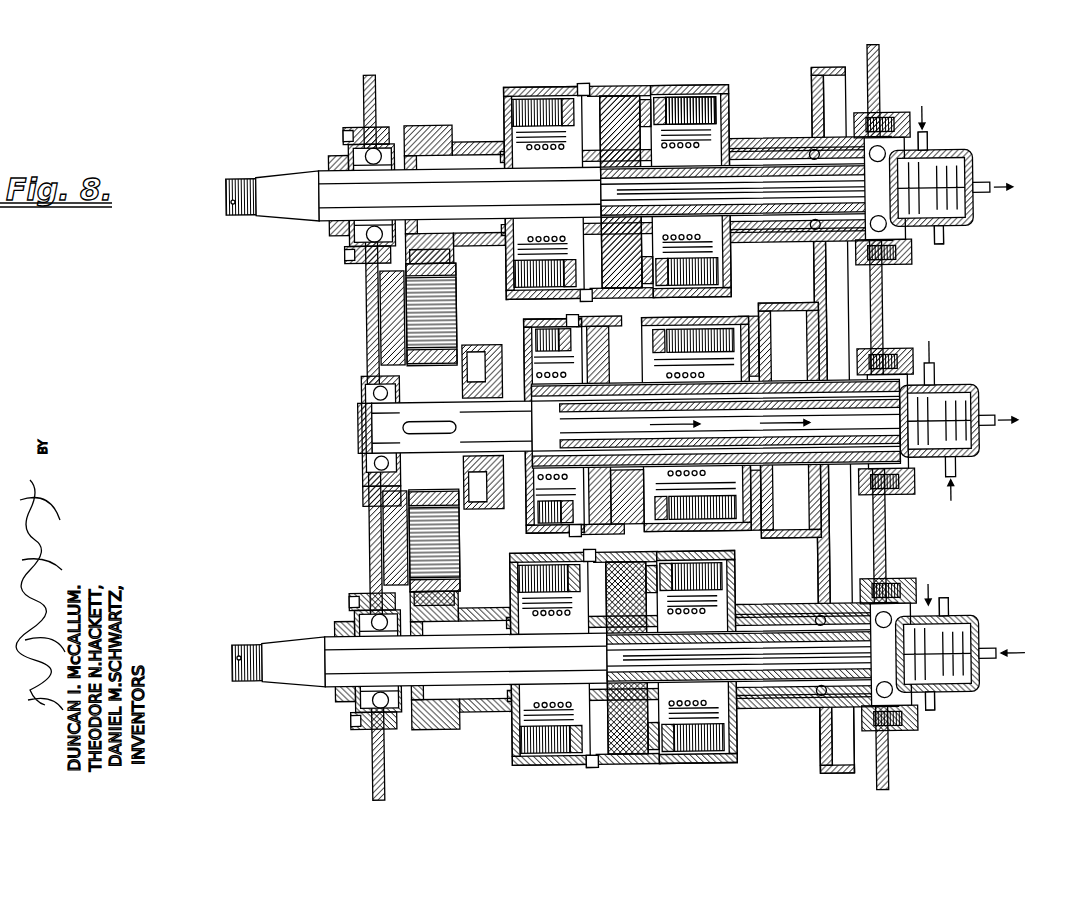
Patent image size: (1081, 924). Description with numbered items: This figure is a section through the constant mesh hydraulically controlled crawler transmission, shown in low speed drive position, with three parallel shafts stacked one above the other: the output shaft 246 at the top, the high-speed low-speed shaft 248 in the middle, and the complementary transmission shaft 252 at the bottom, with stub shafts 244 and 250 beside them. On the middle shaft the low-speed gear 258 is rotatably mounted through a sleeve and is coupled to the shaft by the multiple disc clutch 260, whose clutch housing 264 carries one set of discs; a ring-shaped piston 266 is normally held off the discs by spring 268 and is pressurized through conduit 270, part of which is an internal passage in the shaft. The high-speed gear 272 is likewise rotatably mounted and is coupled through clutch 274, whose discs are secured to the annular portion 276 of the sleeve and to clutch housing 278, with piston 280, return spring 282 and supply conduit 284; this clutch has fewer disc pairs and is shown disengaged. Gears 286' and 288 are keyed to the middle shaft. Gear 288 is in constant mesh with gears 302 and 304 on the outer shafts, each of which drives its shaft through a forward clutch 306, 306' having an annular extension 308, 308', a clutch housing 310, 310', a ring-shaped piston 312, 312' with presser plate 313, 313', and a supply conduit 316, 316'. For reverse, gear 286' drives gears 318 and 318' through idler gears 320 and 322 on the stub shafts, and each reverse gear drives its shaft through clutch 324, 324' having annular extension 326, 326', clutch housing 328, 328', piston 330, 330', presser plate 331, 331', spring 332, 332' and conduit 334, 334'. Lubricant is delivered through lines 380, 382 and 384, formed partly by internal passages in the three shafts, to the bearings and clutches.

The stub shaft 244 is at (398, 320).
The shaft 246 is at (342, 180).
The high-speed low-speed shaft 248 is at (360, 432).
The stub shaft 250 is at (398, 536).
The complementary transmission shaft 252 is at (345, 648).
The gear 258 is at (788, 320).
The multiple disc clutch 260 is at (770, 322).
The clutch housing 264 is at (740, 320).
The ring-shaped piston 266 is at (705, 328).
The spring 268 is at (705, 521).
The conduit 270 is at (944, 486).
The gear 272 is at (462, 320).
The multiple disc clutch 274 is at (512, 352).
The annular portion 276 is at (504, 498).
The clutch housing 278 is at (544, 415).
The ring-shaped piston 280 is at (589, 417).
The spring 282 is at (572, 446).
The conduit 284 is at (980, 420).
The gear 286' is at (348, 417).
The gear 288 is at (856, 340).
The gear 302 is at (886, 283).
The gear 304 is at (852, 566).
The multiple disc clutch 306 is at (791, 245).
The multiple disc clutch 306' is at (829, 752).
The annular extension 308 is at (696, 175).
The annular extension 308' is at (702, 669).
The clutch housing 310 is at (690, 92).
The clutch housing 310' is at (714, 672).
The ring-shaped piston 312 is at (626, 163).
The ring-shaped piston 312' is at (667, 677).
The presser plate 313 is at (694, 167).
The presser plate 313' is at (643, 508).
The conduit 316 is at (821, 159).
The conduit 316' is at (833, 690).
The gear 318 is at (335, 187).
The gear 318' is at (341, 667).
The idler gear 320 is at (366, 275).
The idler gear 322 is at (364, 495).
The multiple disc clutch 324 is at (466, 119).
The multiple disc clutch 324' is at (484, 749).
The annular extension 326 is at (419, 180).
The annular extension 326' is at (432, 688).
The clutch housing 328 is at (509, 168).
The clutch housing 328' is at (550, 680).
The ring-shaped piston 330 is at (613, 170).
The ring-shaped piston 330' is at (640, 679).
The presser plate 331 is at (553, 66).
The presser plate 331' is at (617, 783).
The spring 332 is at (479, 178).
The spring 332' is at (533, 710).
The conduit 334 is at (934, 188).
The conduit 334' is at (948, 654).
The lubricant line 380 is at (936, 370).
The lubricant line 382 is at (932, 140).
The lubricant line 384 is at (934, 610).